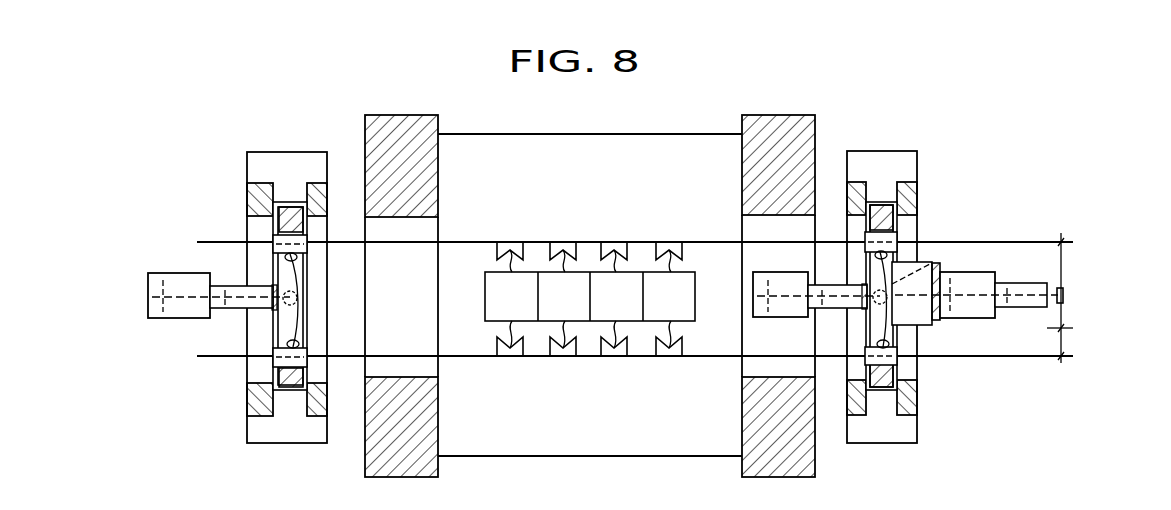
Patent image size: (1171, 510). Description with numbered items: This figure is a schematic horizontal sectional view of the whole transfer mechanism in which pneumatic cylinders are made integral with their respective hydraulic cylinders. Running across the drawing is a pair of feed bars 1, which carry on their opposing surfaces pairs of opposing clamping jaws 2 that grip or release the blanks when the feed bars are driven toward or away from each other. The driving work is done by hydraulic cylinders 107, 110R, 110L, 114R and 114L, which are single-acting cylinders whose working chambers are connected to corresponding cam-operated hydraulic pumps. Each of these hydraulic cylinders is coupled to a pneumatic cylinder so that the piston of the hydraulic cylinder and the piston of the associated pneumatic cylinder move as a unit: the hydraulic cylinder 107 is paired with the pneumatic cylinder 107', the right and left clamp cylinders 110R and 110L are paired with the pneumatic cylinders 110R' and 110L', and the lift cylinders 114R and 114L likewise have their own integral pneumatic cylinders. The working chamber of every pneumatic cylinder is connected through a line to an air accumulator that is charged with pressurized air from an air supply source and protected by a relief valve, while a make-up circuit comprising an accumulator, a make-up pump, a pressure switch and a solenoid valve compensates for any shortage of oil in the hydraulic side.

The feed bar 1 is at (714, 237).
The clamping jaw 2 is at (590, 299).
The hydraulic cylinder 107 is at (979, 314).
The pneumatic cylinder 107' is at (967, 309).
The hydraulic cylinder 110L is at (221, 316).
The pneumatic cylinder 110L' is at (174, 310).
The hydraulic cylinder 110R is at (818, 274).
The pneumatic cylinder 110R' is at (781, 309).
The hydraulic cylinder 114L is at (283, 285).
The hydraulic cylinder 114R is at (931, 259).